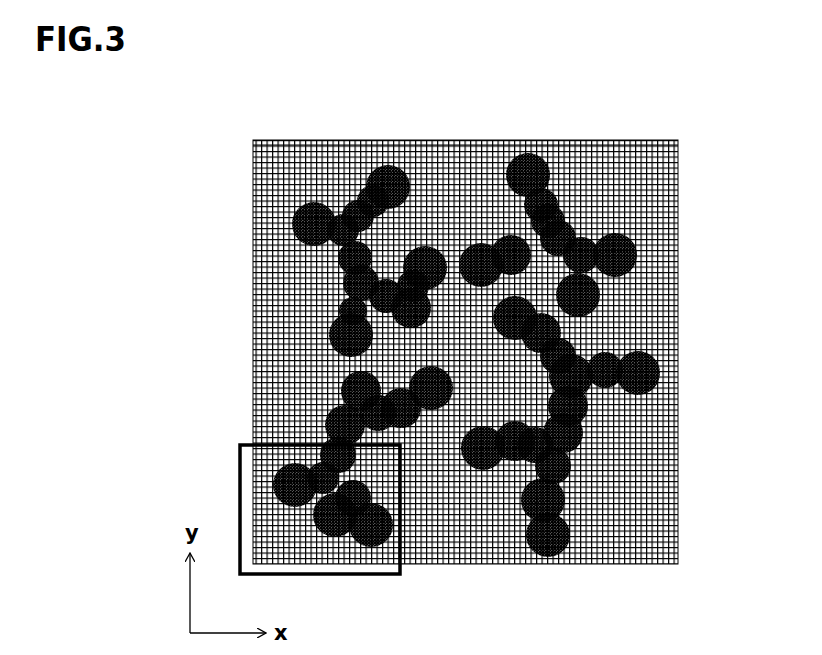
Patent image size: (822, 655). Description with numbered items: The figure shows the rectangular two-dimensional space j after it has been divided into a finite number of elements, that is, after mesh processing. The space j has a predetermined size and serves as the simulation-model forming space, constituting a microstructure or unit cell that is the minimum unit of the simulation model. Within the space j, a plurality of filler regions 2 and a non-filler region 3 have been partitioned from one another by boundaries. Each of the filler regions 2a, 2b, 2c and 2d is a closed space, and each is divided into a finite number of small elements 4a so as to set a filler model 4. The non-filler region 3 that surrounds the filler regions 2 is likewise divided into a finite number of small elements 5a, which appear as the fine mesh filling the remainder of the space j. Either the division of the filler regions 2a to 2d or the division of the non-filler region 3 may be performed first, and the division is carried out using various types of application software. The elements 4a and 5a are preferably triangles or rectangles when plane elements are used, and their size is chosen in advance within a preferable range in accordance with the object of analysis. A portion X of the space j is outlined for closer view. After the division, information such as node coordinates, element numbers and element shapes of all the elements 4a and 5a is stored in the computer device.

The filler region 2 is at (460, 355).
The filler region 2a is at (300, 213).
The filler region 2b is at (285, 478).
The filler region 2c is at (615, 240).
The filler region 2d is at (650, 353).
The non-filler region 3 is at (632, 435).
The filler model 4 is at (160, 258).
The element 4a is at (335, 272).
The element 5a is at (281, 135).
The two-dimensional space j is at (509, 307).
The enlarged region X is at (230, 510).